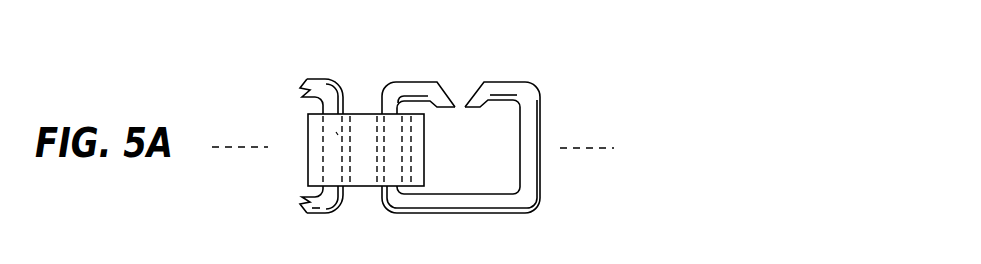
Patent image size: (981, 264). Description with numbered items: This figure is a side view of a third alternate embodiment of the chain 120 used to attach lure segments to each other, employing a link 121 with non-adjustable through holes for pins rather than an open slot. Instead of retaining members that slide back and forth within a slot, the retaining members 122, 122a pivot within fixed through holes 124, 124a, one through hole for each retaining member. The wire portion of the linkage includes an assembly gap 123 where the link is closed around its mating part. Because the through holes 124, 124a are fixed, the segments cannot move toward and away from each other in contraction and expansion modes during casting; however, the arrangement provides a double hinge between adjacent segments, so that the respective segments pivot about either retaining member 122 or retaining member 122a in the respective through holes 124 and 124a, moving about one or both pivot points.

The chain 120 is at (590, 80).
The link 121 is at (358, 173).
The retaining member 122 is at (312, 80).
The retaining member 122a is at (518, 202).
The assembly gap 123 is at (460, 88).
The through hole 124 is at (348, 114).
The through hole 124a is at (377, 186).